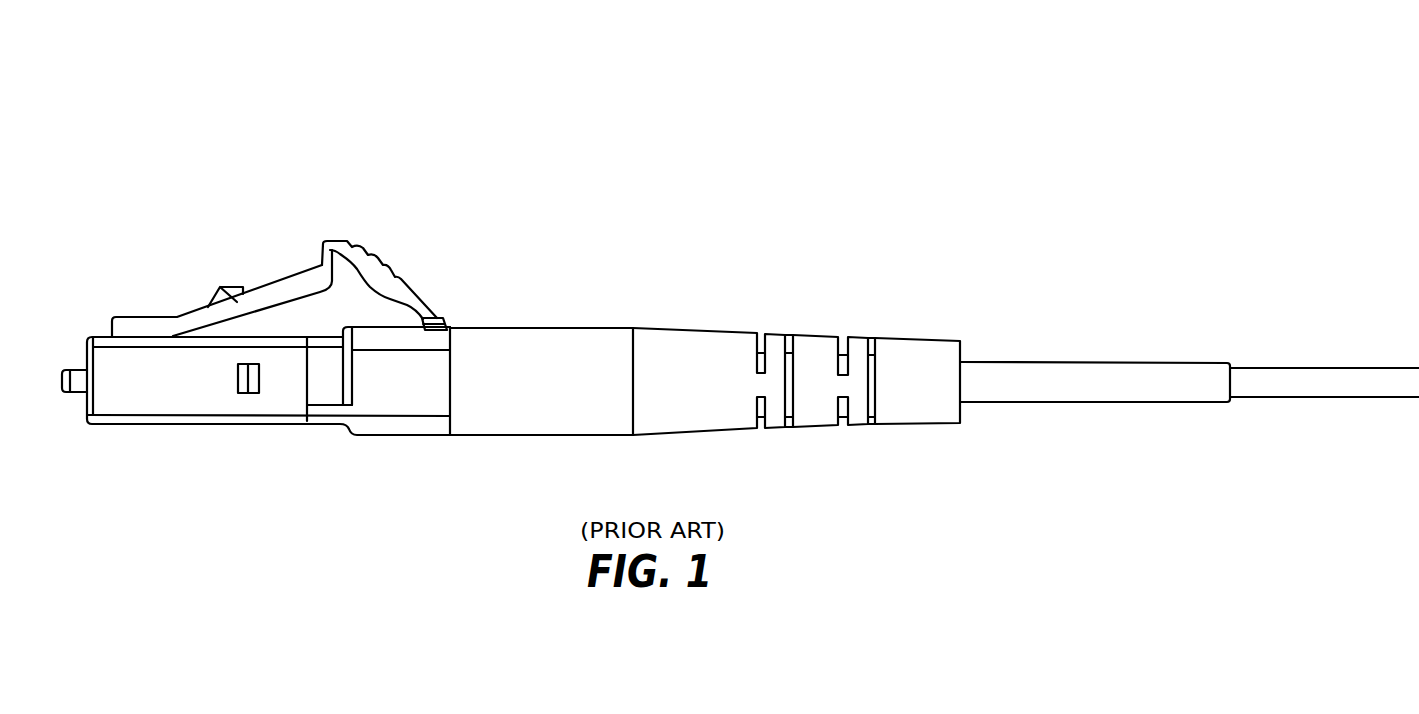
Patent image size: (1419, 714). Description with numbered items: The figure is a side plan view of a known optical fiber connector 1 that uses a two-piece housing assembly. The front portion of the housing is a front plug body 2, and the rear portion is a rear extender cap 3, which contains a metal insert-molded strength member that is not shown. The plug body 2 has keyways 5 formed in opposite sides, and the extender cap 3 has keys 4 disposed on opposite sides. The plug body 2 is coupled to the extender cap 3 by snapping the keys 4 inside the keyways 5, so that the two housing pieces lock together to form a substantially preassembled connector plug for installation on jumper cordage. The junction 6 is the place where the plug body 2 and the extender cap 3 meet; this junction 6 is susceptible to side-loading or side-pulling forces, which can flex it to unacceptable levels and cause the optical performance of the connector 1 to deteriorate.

The connector 1 is at (479, 110).
The front plug body 2 is at (125, 393).
The rear extender cap 3 is at (415, 393).
The keys 4 is at (253, 372).
The keyways 5 is at (238, 378).
The junction 6 is at (343, 383).